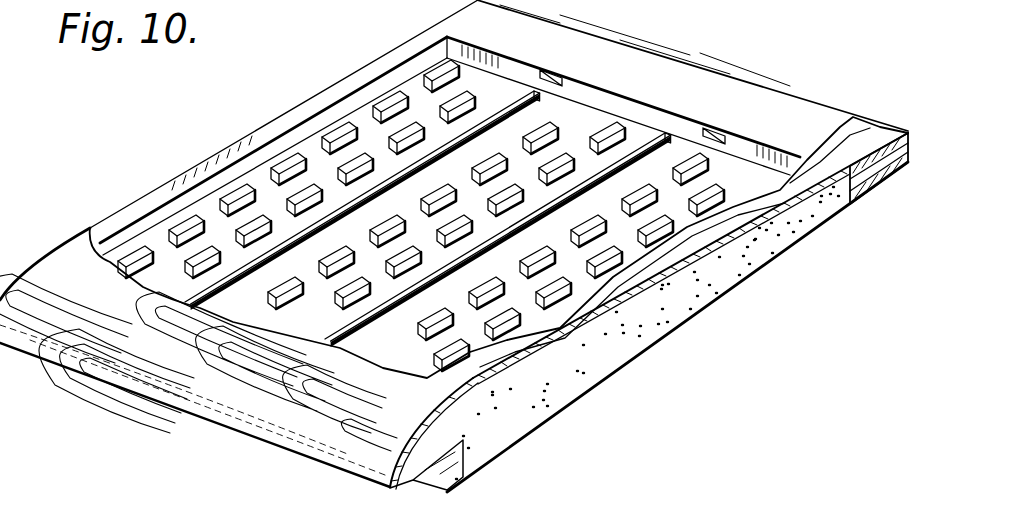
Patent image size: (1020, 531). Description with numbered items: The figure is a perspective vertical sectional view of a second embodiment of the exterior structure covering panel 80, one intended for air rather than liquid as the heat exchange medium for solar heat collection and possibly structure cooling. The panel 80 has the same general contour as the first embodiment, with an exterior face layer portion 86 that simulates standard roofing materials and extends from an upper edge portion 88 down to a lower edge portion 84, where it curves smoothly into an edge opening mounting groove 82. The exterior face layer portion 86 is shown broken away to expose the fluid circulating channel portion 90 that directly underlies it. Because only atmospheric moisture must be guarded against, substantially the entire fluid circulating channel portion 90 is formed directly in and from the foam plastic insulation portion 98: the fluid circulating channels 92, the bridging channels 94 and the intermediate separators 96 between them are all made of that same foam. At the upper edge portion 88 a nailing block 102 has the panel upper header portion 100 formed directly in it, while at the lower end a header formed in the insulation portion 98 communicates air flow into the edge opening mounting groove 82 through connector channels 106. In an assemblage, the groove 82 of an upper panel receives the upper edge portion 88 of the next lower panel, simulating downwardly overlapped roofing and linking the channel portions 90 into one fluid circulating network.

The panel 80 is at (41, 257).
The edge opening mounting groove 82 is at (450, 490).
The lower edge portion 84 is at (220, 415).
The exterior face layer portion 86 is at (383, 469).
The upper edge portion 88 is at (713, 67).
The fluid circulating channel portion 90 is at (267, 203).
The fluid circulating channel 92 is at (193, 250).
The bridging channel 94 is at (202, 210).
The intermediate separator 96 is at (457, 143).
The insulation portion 98 is at (520, 415).
The panel upper header portion 100 is at (892, 177).
The nailing block 102 is at (880, 190).
The connector channel 106 is at (548, 80).